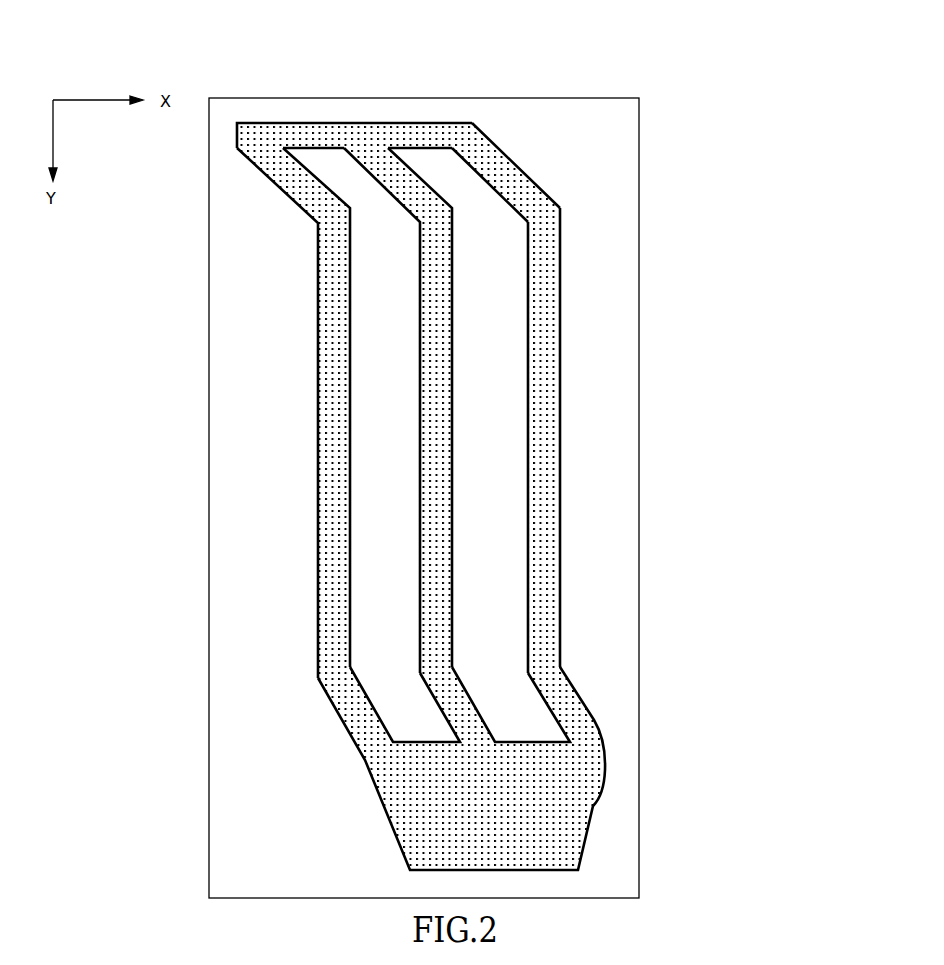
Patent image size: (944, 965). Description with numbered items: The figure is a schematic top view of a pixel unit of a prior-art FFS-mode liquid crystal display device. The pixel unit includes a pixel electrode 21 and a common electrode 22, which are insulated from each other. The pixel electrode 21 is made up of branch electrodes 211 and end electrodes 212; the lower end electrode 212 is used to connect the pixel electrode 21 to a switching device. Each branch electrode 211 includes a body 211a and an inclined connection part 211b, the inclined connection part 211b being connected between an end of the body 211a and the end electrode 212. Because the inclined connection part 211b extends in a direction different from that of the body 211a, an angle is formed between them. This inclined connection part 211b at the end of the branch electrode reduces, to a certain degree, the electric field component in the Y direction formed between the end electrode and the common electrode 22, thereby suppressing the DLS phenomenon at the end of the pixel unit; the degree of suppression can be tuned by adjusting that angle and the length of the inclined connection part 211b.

The pixel electrode 21 is at (550, 435).
The end electrode 212 is at (593, 808).
The branch electrode 211 is at (657, 389).
The body 211a is at (560, 270).
The inclined connection part 211b is at (538, 187).
The common electrode 22 is at (582, 470).